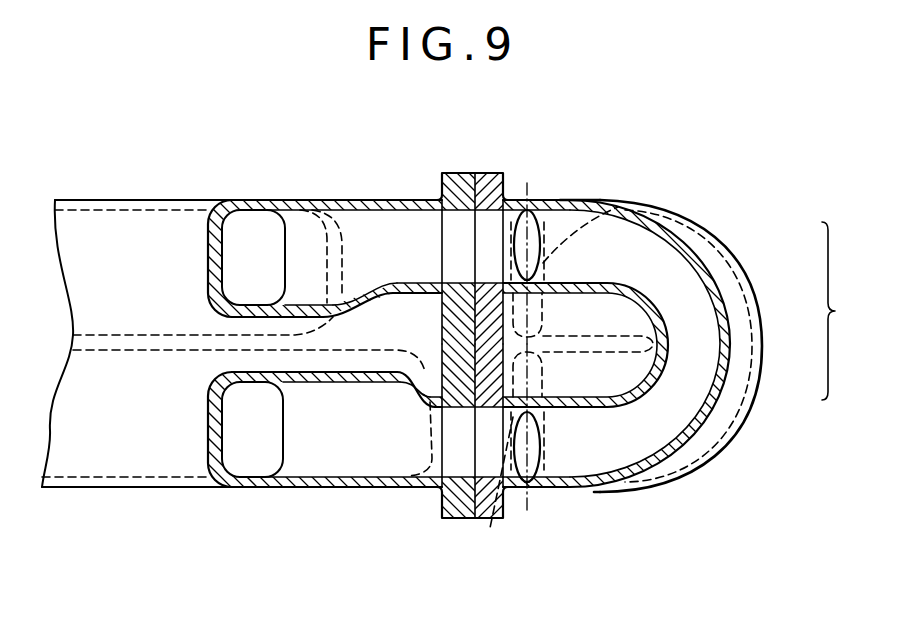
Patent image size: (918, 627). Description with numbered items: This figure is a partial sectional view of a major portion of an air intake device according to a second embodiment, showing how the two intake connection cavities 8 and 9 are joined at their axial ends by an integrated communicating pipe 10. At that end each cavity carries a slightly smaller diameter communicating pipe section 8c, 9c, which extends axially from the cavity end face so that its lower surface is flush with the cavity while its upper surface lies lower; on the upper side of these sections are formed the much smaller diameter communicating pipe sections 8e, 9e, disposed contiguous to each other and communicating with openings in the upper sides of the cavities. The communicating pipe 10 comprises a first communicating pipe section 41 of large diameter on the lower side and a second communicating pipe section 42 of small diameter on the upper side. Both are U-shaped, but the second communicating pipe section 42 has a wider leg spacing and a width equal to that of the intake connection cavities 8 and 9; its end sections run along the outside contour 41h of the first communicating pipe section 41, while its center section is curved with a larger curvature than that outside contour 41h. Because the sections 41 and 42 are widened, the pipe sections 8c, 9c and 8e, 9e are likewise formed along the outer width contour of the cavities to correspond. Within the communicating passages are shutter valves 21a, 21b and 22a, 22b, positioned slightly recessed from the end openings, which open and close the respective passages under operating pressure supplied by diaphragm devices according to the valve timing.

The intake connection cavity 8 is at (121, 200).
The intake connection cavity 9 is at (130, 488).
The communicating pipe section 8e is at (363, 252).
The communicating pipe section 8c is at (407, 252).
The communicating pipe section 9e is at (320, 452).
The communicating pipe section 9c is at (418, 488).
The shutter valve 21a is at (618, 207).
The shutter valve 21b is at (472, 369).
The shutter valve 22a is at (543, 228).
The shutter valve 22b is at (541, 432).
The first communicating pipe section 41 is at (735, 274).
The outside contour 41h is at (578, 204).
The second communicating pipe section 42 is at (697, 376).
The communicating pipe 10 is at (845, 311).